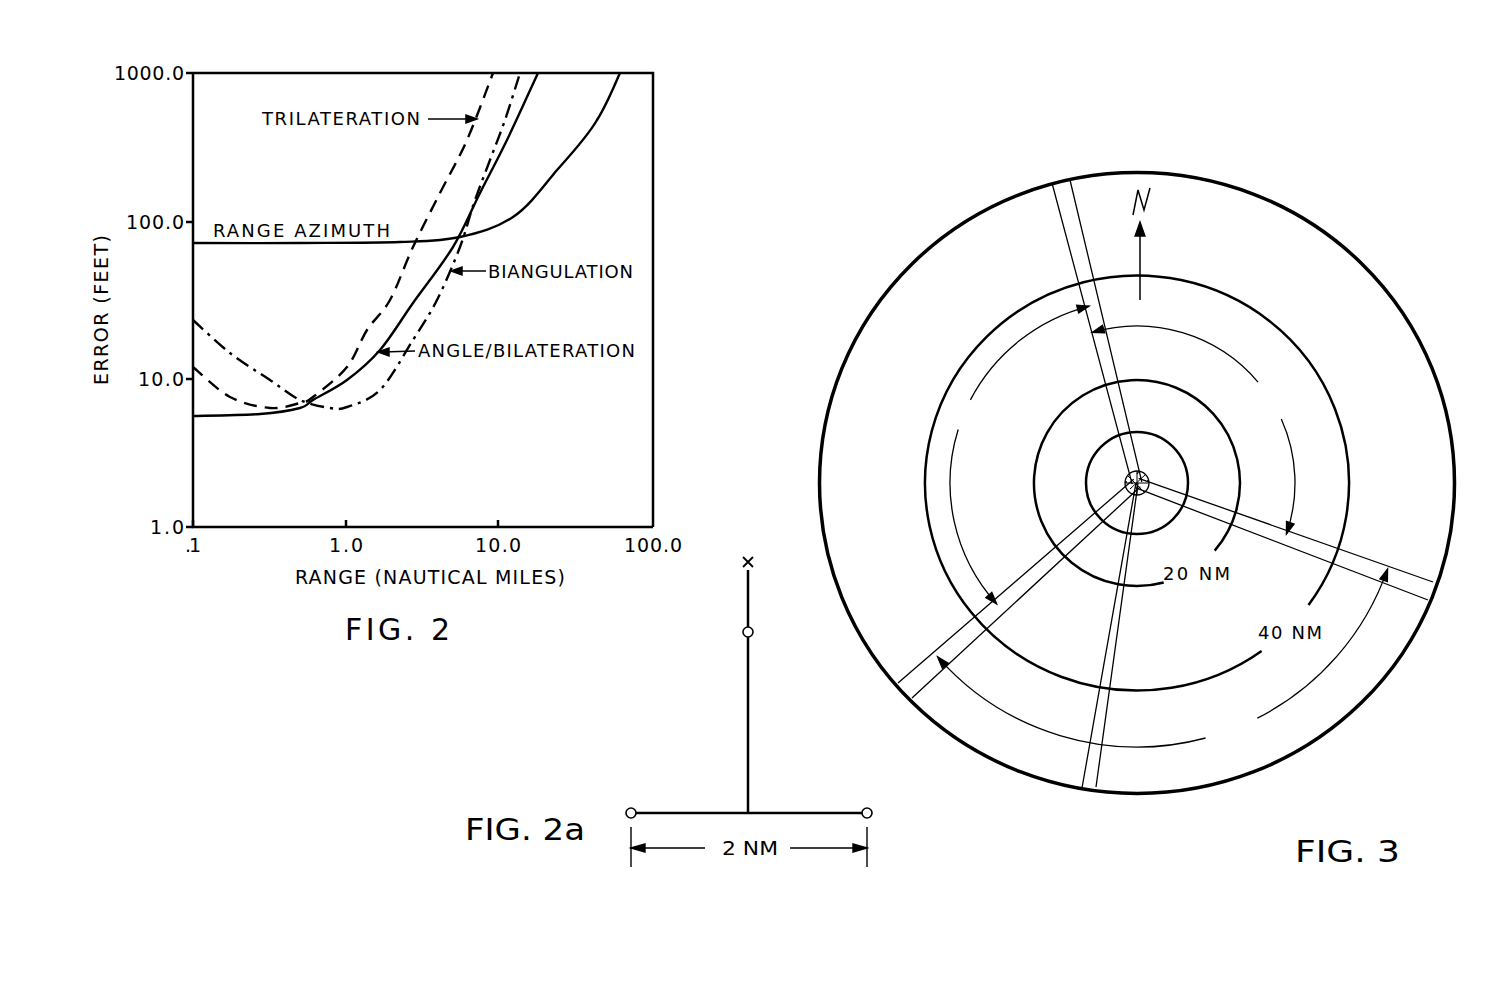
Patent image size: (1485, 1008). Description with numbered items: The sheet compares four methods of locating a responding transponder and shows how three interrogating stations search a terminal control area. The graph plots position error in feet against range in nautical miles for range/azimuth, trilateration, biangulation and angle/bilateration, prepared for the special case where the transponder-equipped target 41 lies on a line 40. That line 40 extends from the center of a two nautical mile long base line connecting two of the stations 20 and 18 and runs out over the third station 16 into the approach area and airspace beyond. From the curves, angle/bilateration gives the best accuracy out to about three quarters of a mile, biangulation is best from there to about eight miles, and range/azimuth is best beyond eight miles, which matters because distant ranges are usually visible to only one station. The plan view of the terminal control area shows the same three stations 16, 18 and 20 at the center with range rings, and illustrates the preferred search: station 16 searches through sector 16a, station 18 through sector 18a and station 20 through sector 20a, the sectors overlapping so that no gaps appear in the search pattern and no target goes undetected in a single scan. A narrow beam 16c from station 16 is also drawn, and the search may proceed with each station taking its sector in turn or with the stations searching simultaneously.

In FIG. 2a, the third station 16 is at (753, 628).
In FIG. 3, the third station 16 is at (1139, 471).
In FIG. 2a, the station 18 is at (870, 807).
In FIG. 3, the station 18 is at (1149, 481).
In FIG. 2a, the station 20 is at (636, 806).
In FIG. 3, the station 20 is at (1125, 482).
In FIG. 2a, the line 40 is at (748, 708).
In FIG. 2a, the target 41 is at (745, 555).
In FIG. 3, the sector 16a is at (1163, 658).
In FIG. 3, the sector 18a is at (1017, 454).
In FIG. 3, the sector 20a is at (1193, 429).
In FIG. 3, the narrow corridor of station 16 16c is at (1095, 773).